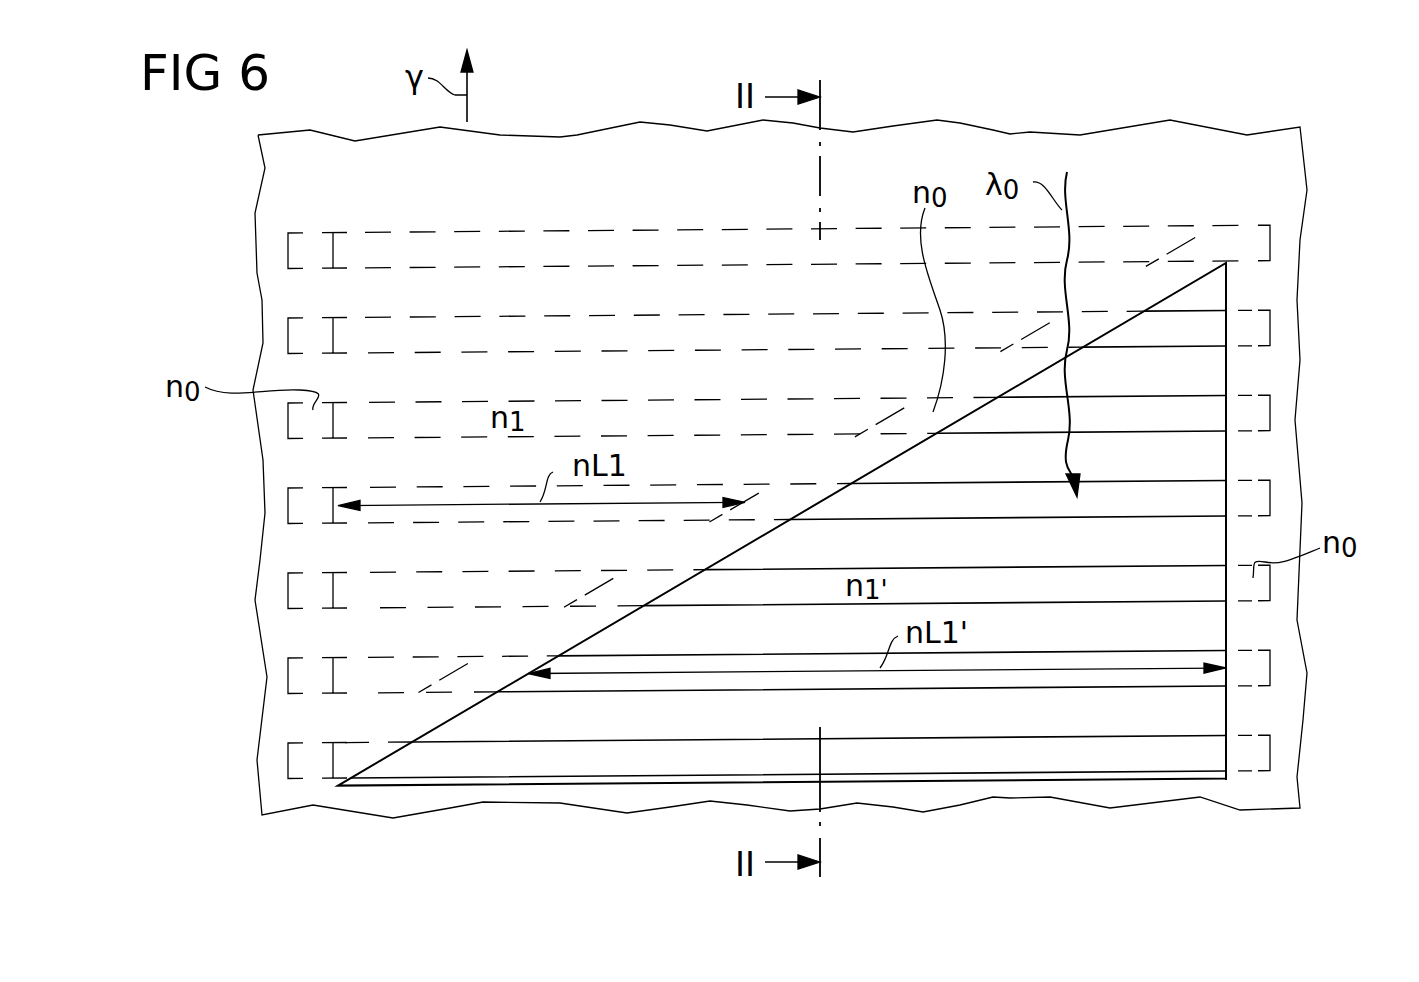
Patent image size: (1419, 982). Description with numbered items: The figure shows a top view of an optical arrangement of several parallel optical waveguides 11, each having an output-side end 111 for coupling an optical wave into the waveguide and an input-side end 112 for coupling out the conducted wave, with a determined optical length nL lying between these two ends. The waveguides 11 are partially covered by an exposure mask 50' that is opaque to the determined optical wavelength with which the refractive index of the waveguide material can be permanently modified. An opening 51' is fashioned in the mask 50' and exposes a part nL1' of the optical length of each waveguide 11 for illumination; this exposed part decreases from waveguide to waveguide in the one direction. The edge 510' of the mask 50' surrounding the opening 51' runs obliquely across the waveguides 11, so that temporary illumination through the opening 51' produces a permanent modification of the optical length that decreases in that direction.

The optical waveguide 11 is at (632, 238).
The output-side end 111 is at (288, 250).
The input-side end 112 is at (1272, 247).
The exposure mask 50' is at (780, 443).
The opening 51' is at (1125, 576).
The edge 510' is at (782, 559).